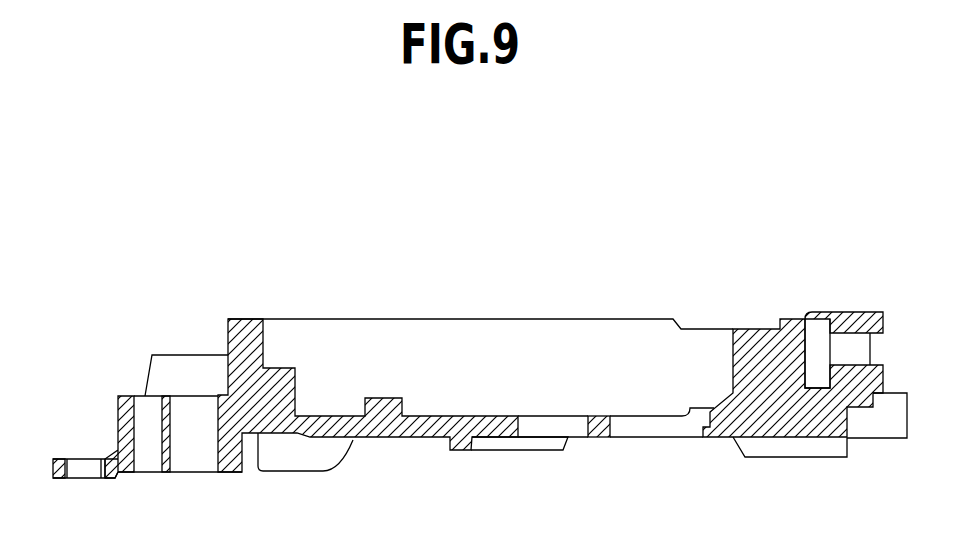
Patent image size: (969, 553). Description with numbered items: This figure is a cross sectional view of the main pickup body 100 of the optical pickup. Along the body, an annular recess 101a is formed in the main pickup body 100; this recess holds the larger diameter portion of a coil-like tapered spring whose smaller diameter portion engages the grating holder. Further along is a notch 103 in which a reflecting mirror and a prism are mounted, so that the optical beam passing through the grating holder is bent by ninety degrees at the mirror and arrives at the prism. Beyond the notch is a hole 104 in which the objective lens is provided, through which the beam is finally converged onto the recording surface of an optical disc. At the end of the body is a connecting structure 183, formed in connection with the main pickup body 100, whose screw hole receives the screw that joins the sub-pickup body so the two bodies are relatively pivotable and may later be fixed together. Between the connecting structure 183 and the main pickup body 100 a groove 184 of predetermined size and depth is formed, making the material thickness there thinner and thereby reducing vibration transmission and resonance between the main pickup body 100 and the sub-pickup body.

The main pickup body 100 is at (294, 319).
The annular recess 101a is at (62, 459).
The notch 103 is at (443, 416).
The hole 104 is at (610, 425).
The connecting structure 183 is at (863, 313).
The groove 184 is at (815, 360).